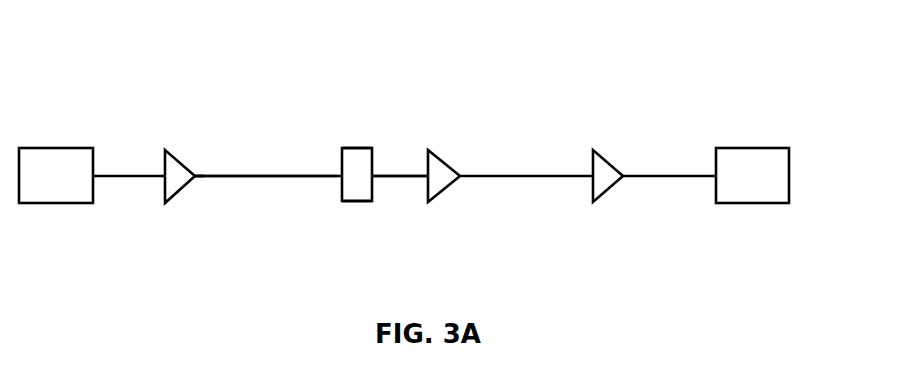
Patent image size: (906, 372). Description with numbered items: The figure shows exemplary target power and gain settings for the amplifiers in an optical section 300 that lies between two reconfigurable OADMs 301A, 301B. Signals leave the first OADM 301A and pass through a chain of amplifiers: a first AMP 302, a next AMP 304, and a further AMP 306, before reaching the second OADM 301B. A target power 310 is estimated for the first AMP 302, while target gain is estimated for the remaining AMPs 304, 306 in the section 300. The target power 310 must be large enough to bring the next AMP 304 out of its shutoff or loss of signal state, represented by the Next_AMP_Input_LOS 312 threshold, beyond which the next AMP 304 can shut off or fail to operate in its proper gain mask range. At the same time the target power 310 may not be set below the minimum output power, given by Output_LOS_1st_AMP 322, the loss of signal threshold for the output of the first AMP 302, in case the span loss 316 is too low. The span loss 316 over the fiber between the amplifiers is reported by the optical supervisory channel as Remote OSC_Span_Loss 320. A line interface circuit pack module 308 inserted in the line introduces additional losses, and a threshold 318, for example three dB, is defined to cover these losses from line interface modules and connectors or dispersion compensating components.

The optical section 300 is at (121, 66).
The reconfigurable OADM 301A is at (45, 148).
The reconfigurable OADM 301B is at (740, 148).
The first AMP 302 is at (165, 199).
The next AMP 304 is at (440, 162).
The AMP 306 is at (606, 160).
The line interface circuit pack module 308 is at (372, 196).
The target power 310 is at (194, 178).
The Next_AMP_Input_LOS 312 is at (428, 172).
The span loss 316 is at (338, 172).
The threshold 318 is at (372, 205).
The Remote OSC_Span_Loss 320 is at (353, 148).
The Output_LOS_1st_AMP 322 is at (194, 174).